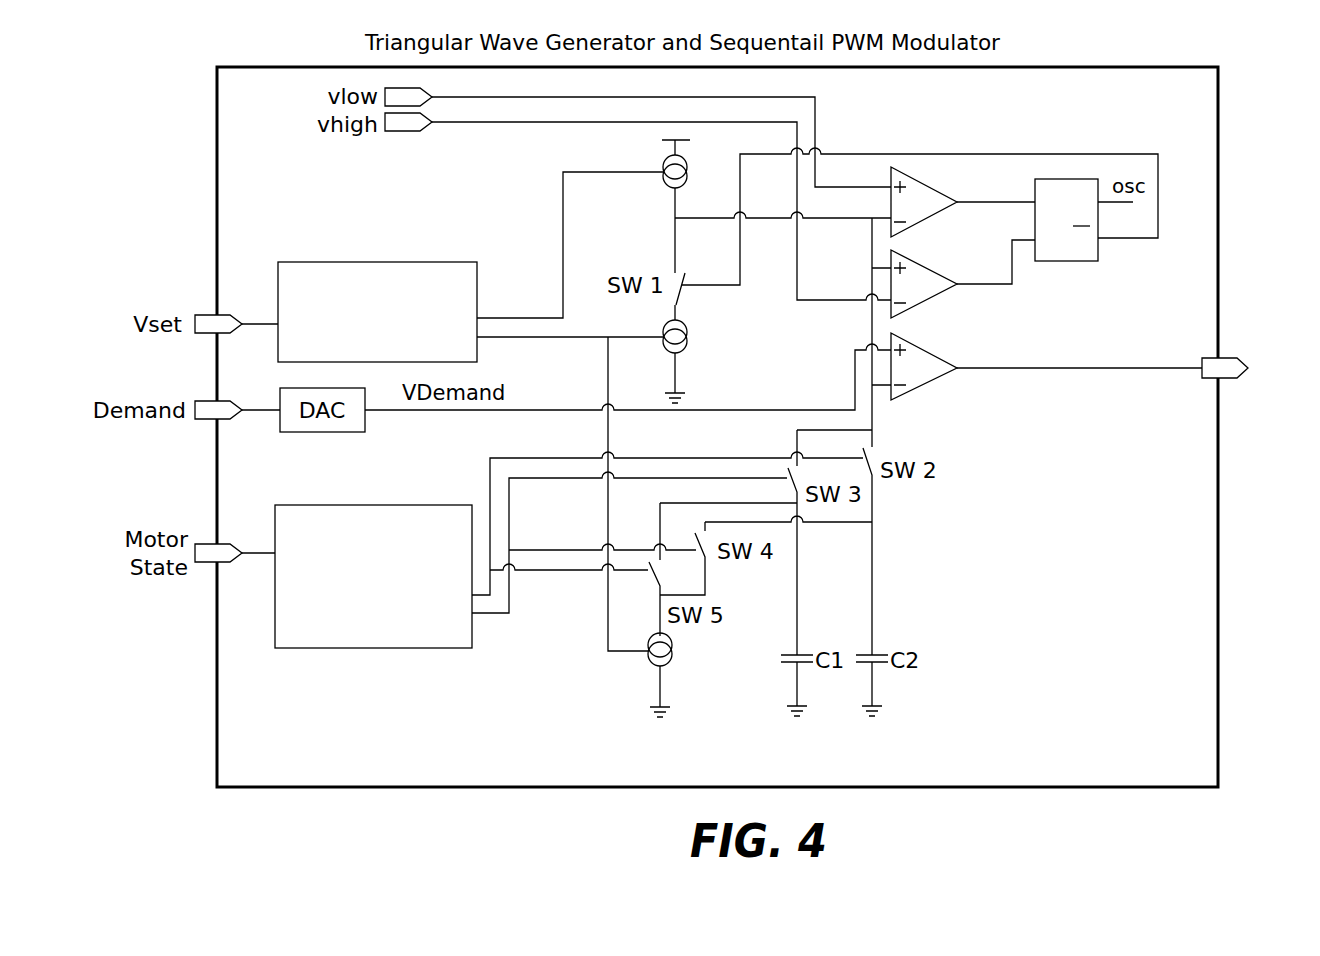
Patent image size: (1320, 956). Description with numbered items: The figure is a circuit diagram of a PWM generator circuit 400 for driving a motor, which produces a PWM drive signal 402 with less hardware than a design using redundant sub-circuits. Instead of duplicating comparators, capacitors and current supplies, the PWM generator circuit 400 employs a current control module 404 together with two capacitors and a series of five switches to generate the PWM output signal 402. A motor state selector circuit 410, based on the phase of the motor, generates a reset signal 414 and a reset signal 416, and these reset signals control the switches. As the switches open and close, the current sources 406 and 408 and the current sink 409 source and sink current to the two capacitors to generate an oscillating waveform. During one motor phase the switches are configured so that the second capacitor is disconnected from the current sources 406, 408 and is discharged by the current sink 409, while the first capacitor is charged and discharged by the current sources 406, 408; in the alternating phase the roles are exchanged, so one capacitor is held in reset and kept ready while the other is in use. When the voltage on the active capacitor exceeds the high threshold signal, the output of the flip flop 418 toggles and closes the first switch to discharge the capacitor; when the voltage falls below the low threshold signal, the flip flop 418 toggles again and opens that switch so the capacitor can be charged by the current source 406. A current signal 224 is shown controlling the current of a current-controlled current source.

The PWM generator circuit 400 is at (1272, 78).
The PWM drive signal 402 is at (1097, 367).
The current control module 404 is at (377, 312).
The current source 406 is at (667, 162).
The current source 408 is at (688, 339).
The current sink 409 is at (650, 662).
The motor state selector circuit 410 is at (373, 576).
The reset signal 414 is at (497, 615).
The reset signal 416 is at (490, 480).
The flip flop 418 is at (1058, 262).
The current signal 224 is at (872, 417).